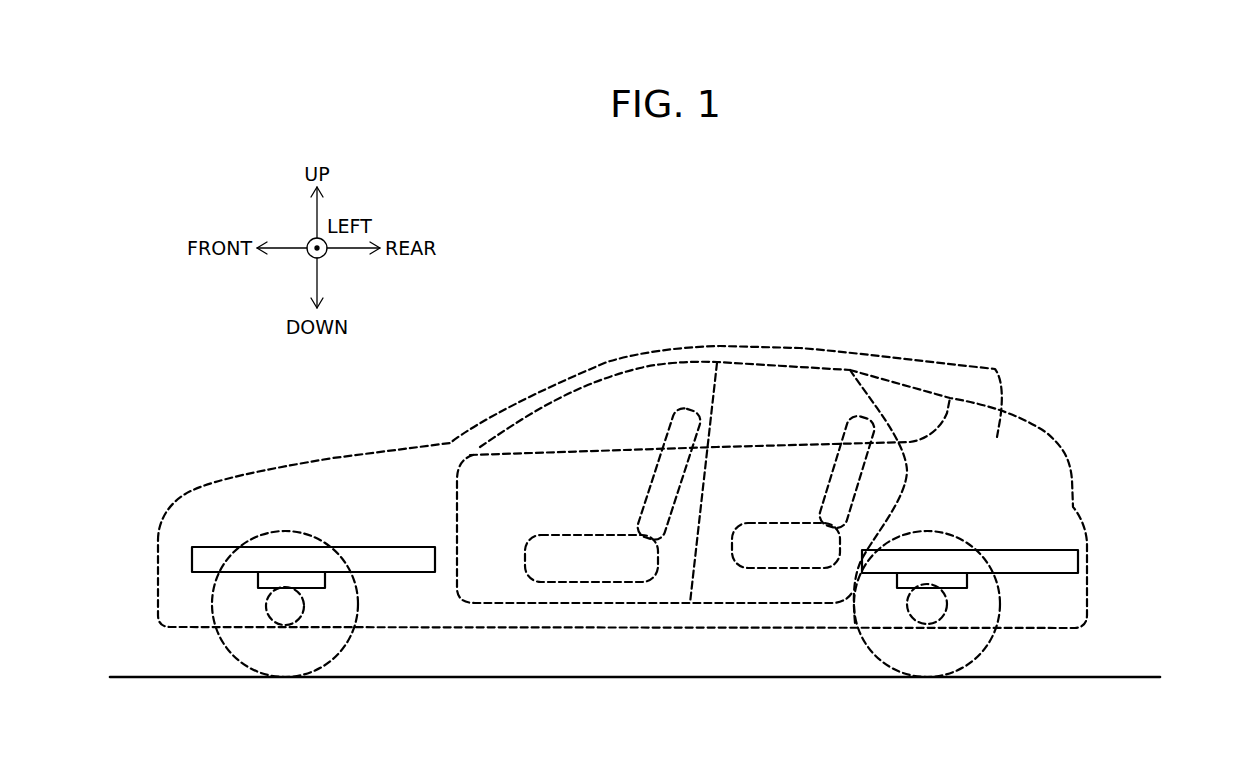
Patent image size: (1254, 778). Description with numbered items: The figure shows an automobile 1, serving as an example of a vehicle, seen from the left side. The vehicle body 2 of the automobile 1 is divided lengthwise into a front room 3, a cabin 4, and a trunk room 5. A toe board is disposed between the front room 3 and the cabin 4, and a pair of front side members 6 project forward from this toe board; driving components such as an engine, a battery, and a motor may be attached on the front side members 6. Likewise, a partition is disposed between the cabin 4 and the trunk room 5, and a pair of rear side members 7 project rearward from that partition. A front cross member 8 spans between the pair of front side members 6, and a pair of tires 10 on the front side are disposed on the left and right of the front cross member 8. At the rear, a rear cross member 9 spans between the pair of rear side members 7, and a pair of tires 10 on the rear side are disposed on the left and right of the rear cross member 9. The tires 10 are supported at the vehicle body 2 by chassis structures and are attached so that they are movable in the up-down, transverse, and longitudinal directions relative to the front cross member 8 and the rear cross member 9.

The automobile 1 is at (622, 478).
The vehicle body 2 is at (632, 313).
The front room 3 is at (328, 480).
The cabin 4 is at (668, 385).
The trunk room 5 is at (998, 370).
The front side members 6 is at (383, 553).
The rear side members 7 is at (1045, 560).
The front cross member 8 is at (270, 580).
The rear cross member 9 is at (912, 580).
The tires 10 is at (300, 655).